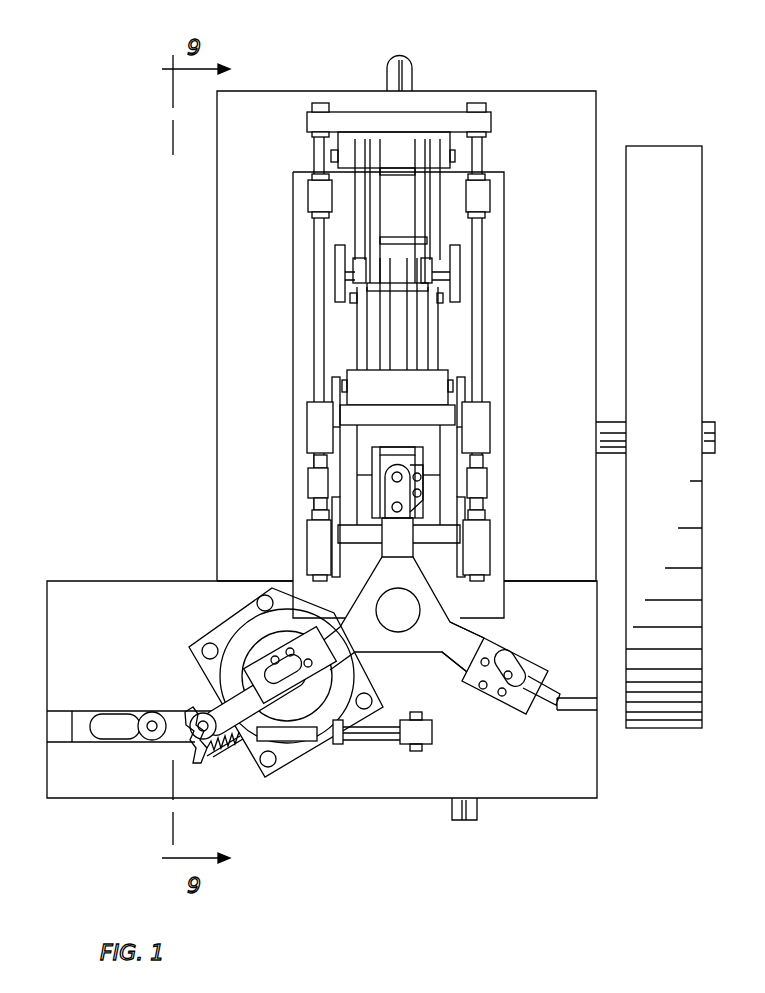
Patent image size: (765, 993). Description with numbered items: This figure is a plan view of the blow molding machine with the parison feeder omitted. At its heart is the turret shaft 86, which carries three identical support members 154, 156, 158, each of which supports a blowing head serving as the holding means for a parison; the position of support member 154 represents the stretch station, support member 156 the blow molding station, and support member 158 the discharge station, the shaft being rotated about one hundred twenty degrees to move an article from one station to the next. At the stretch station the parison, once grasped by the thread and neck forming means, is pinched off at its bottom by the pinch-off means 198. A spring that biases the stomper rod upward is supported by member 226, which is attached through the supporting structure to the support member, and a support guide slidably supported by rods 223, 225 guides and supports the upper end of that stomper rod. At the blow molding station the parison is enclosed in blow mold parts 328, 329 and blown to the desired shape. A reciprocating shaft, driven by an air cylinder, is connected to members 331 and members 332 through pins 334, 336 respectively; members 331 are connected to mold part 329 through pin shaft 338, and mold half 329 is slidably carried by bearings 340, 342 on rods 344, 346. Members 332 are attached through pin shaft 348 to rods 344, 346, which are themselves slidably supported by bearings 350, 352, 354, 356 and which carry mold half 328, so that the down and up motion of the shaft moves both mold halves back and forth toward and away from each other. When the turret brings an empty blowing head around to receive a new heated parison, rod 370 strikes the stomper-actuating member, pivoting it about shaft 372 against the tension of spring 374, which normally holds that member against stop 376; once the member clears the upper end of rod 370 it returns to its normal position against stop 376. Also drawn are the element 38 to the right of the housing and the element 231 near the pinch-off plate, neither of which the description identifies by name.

The roller 38 is at (668, 220).
The turret shaft 86 is at (410, 620).
The support member 154 is at (347, 660).
The support member 156 is at (412, 562).
The support member 158 is at (463, 650).
The pinch-off means 198 is at (240, 637).
The rod 223 is at (485, 692).
The rod 225 is at (487, 638).
The member 226 is at (325, 648).
The plate hole 231 is at (188, 638).
The blow mold part 328 is at (357, 481).
The blow mold part 329 is at (443, 468).
The members 331 is at (440, 336).
The members 332 is at (383, 147).
The pin 334 is at (356, 304).
The pin 336 is at (452, 240).
The pin shaft 338 is at (340, 382).
The bearing 340 is at (307, 420).
The bearing 342 is at (490, 415).
The rod 344 is at (314, 266).
The rod 346 is at (483, 283).
The pin shaft 348 is at (456, 156).
The bearing 350 is at (490, 192).
The bearing 352 is at (308, 196).
The bearing 354 is at (487, 472).
The bearing 356 is at (309, 470).
The rod 370 is at (502, 695).
The shaft 372 is at (200, 703).
The spring 374 is at (225, 752).
The stop 376 is at (190, 717).